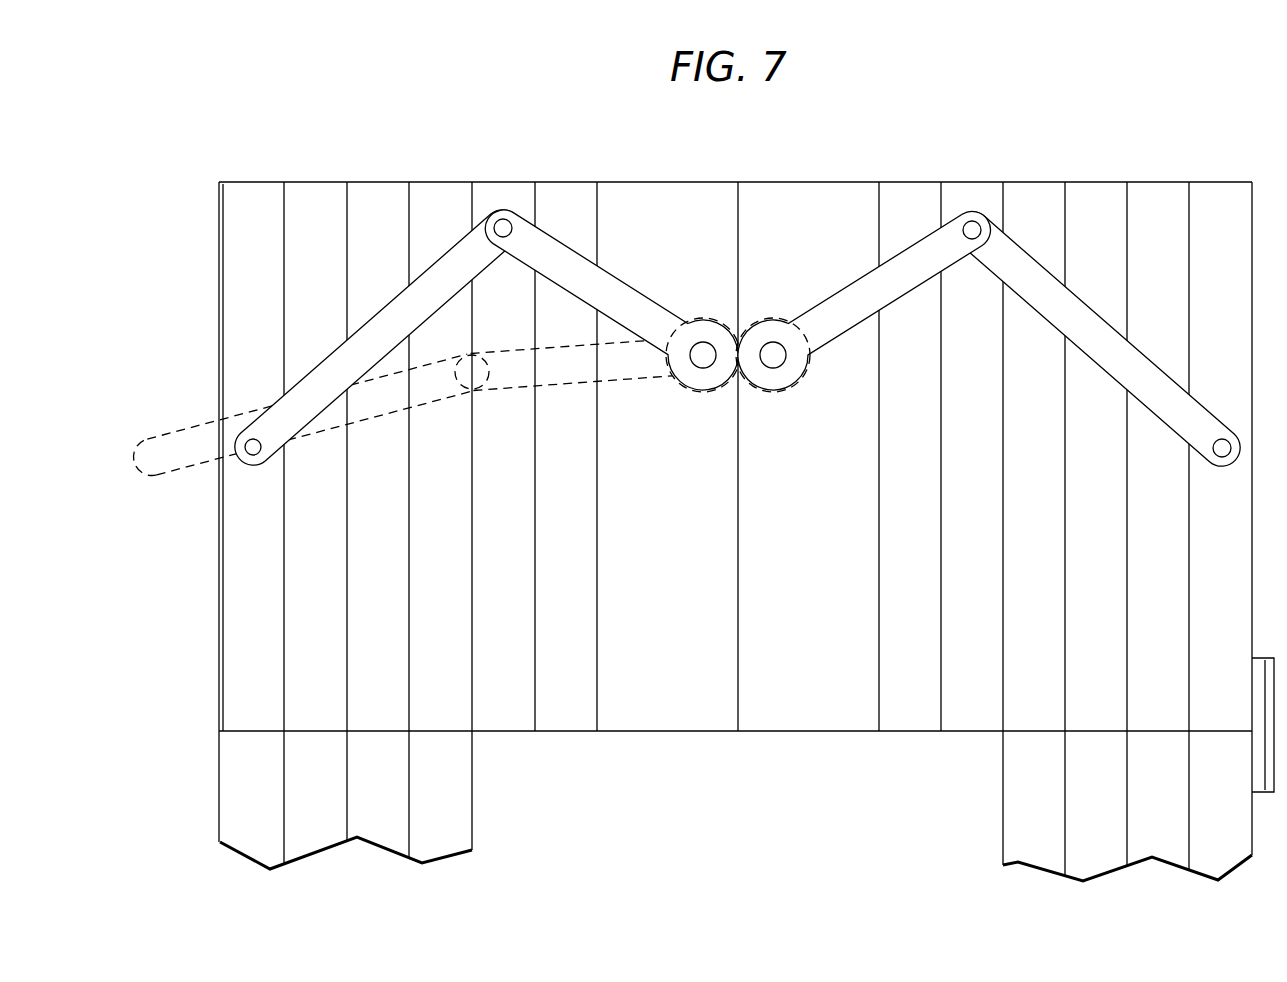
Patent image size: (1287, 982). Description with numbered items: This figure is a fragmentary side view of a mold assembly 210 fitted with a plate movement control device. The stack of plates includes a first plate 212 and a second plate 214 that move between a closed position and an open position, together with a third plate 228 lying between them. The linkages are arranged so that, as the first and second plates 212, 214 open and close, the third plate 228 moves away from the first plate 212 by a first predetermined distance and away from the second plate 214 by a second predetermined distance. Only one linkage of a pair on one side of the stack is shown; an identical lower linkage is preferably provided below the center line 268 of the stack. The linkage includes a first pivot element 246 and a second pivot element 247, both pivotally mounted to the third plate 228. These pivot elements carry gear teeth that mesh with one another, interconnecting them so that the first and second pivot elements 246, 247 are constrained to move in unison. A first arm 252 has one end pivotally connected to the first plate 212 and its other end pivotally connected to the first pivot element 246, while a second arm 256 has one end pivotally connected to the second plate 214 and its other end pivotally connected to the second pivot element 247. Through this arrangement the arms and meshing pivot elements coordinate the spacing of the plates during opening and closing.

The mold assembly 210 is at (430, 100).
The first plate 212 is at (256, 181).
The second plate 214 is at (1213, 181).
The third plate 228 is at (673, 182).
The first pivot element 246 is at (562, 306).
The second pivot element 247 is at (917, 289).
The first arm 252 is at (343, 352).
The second arm 256 is at (1085, 362).
The center line 268 is at (263, 731).